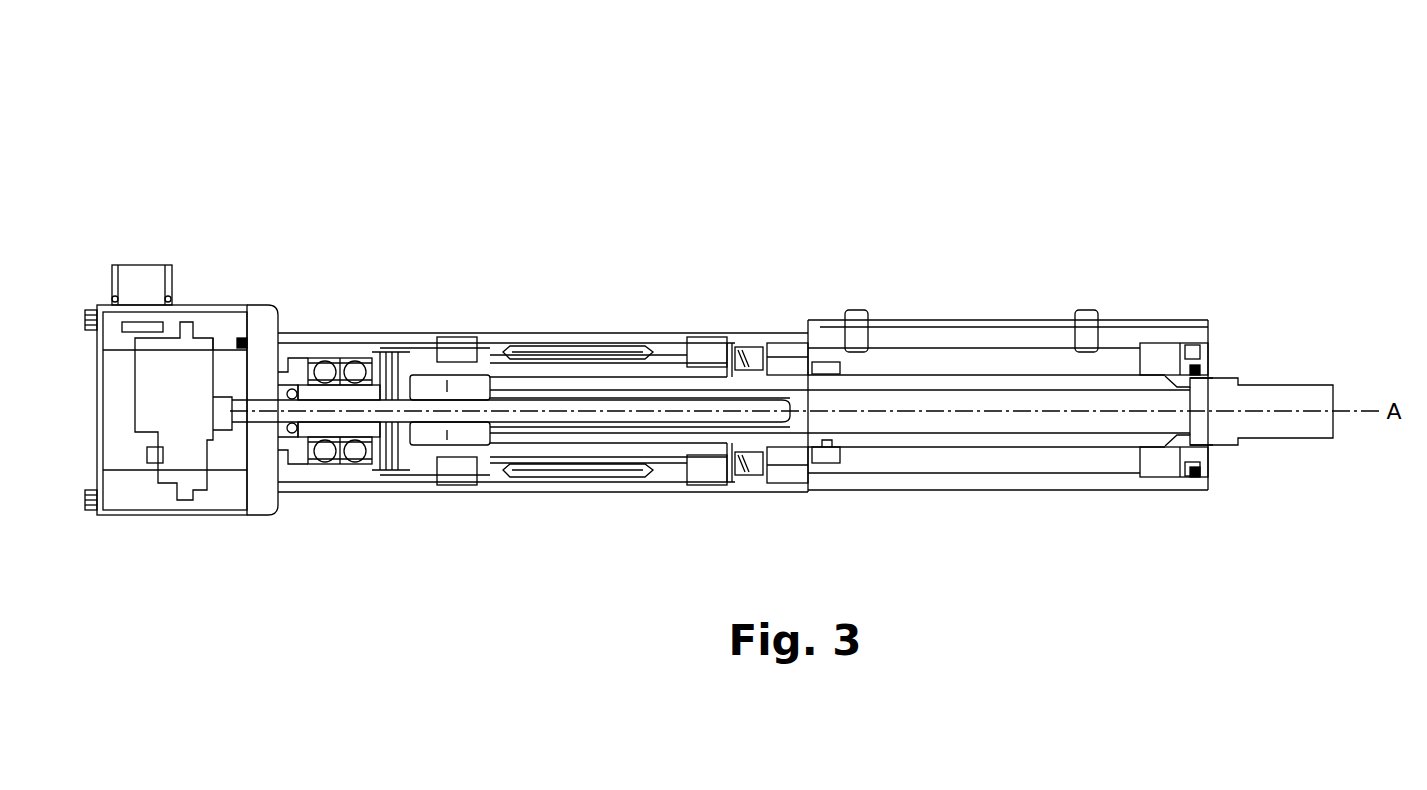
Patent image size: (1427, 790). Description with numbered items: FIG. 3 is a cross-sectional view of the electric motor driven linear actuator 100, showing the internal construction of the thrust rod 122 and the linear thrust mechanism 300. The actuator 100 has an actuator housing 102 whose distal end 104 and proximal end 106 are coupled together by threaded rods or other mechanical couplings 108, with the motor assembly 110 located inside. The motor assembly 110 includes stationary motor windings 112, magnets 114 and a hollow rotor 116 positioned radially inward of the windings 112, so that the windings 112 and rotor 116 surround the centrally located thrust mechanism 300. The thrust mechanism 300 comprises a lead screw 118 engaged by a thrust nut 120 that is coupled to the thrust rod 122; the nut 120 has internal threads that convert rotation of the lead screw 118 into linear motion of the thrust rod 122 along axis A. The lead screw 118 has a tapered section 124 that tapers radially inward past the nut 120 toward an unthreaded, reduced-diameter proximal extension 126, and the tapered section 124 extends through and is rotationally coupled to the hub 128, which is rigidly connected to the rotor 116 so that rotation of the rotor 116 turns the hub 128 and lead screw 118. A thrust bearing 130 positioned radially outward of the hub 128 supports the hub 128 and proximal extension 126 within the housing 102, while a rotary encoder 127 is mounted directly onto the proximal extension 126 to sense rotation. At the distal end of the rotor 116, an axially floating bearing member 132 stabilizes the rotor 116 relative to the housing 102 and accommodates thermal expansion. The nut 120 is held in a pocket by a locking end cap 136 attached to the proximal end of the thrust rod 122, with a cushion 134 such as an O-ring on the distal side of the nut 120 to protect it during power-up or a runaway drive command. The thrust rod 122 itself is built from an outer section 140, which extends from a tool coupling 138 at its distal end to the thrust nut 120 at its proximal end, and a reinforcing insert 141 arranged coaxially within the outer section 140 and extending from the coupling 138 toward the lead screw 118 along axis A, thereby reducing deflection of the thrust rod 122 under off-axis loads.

The linear actuator 100 is at (337, 130).
The linear thrust mechanism 300 is at (804, 258).
The actuator housing 102 is at (718, 357).
The distal end 104 is at (1132, 308).
The proximal end 106 is at (284, 306).
The mechanical couplings 108 is at (1192, 478).
The motor assembly 110 is at (509, 326).
The motor windings 112 is at (563, 470).
The magnets 114 is at (640, 355).
The rotor 116 is at (513, 470).
The lead screw 118 is at (648, 418).
The thrust nut 120 is at (440, 437).
The thrust rod 122 is at (793, 357).
The tapered section 124 is at (350, 425).
The proximal extension 126 is at (297, 440).
The rotary encoder 127 is at (188, 470).
The hub 128 is at (357, 372).
The thrust bearing 130 is at (328, 362).
The bearing member 132 is at (745, 475).
The cushion 134 is at (470, 365).
The locking end cap 136 is at (386, 360).
The tool coupling 138 is at (1277, 392).
The outer section 140 is at (985, 385).
The reinforcing insert 141 is at (905, 422).